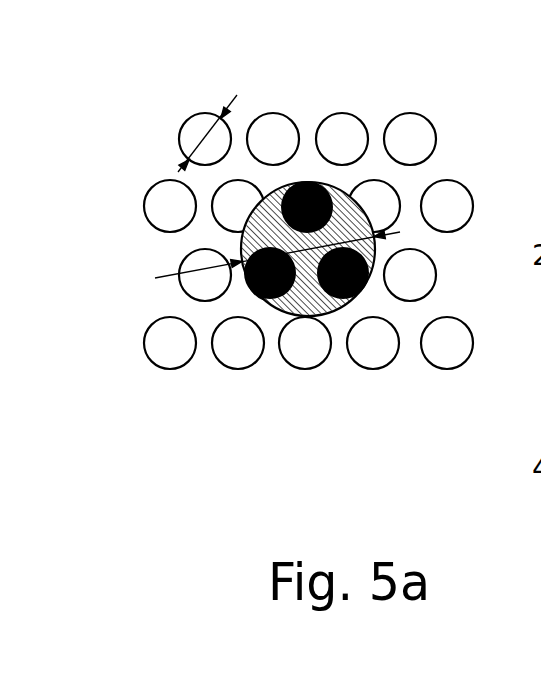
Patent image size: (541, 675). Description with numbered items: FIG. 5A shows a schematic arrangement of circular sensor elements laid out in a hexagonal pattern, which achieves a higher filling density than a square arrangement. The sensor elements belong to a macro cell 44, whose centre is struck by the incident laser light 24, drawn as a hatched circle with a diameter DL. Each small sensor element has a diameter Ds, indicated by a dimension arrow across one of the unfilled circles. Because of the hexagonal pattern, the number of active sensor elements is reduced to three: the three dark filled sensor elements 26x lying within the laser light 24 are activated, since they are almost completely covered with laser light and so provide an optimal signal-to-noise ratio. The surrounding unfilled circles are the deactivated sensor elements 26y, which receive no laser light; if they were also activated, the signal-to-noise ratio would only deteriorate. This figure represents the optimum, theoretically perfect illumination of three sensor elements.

The laser light 24 is at (331, 317).
The activated sensor elements 26x is at (345, 292).
The deactivated sensor elements 26y is at (342, 128).
The macro cell 44 is at (293, 290).
The diameter of sensor element Ds is at (232, 100).
The diameter of laser beam DL is at (168, 275).